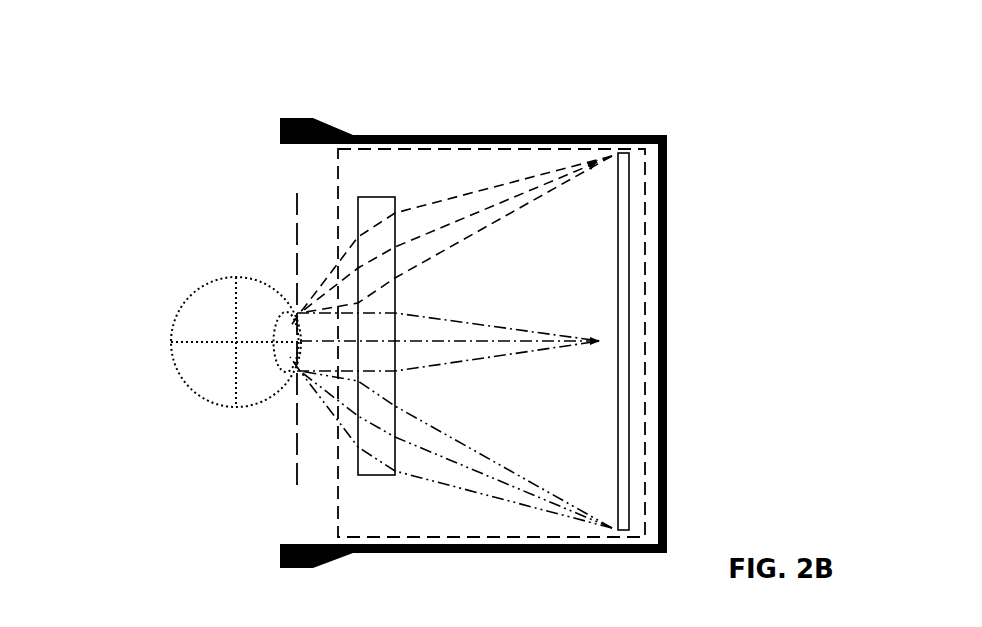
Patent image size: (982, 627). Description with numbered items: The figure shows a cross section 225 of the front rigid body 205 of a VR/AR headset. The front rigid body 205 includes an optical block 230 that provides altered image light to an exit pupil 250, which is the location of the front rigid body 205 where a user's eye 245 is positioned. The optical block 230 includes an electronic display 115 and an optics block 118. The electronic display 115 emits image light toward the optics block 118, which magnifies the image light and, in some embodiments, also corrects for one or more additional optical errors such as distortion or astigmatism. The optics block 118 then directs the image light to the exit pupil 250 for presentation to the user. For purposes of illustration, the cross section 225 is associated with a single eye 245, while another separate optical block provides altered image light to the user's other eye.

The cross section 225 is at (32, 23).
The front rigid body 205 is at (636, 126).
The optical block 230 is at (324, 453).
The optics block 118 is at (347, 202).
The electronic display 115 is at (640, 257).
The eye 245 is at (197, 279).
The exit pupil 250 is at (281, 481).